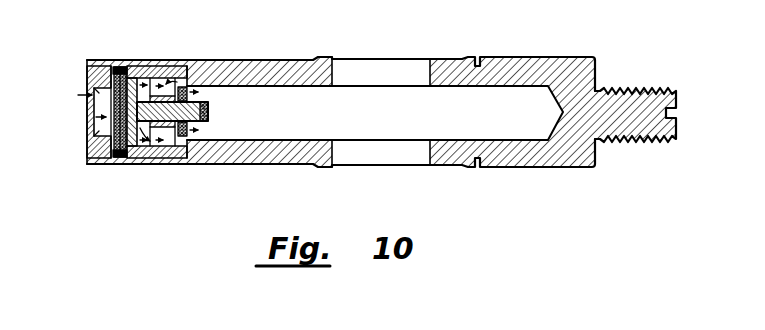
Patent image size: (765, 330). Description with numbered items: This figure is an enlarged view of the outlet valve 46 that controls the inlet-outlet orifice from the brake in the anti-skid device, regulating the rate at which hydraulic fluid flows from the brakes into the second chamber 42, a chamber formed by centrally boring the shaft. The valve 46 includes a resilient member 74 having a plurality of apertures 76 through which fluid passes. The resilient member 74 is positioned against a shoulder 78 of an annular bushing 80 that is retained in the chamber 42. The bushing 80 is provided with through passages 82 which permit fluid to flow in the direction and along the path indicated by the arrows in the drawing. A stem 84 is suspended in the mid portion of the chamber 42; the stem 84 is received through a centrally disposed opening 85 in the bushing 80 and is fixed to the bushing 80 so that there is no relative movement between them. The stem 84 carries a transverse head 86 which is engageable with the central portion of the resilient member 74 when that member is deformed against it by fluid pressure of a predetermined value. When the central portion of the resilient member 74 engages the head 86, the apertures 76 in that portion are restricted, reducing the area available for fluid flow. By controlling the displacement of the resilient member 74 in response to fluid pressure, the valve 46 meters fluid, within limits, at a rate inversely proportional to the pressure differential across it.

The second chamber 42 is at (277, 72).
The outlet valve 46 is at (86, 70).
The resilient member 74 is at (110, 105).
The apertures 76 is at (115, 68).
The shoulder 78 is at (130, 76).
The annular bushing 80 is at (167, 67).
The through passages 82 is at (182, 83).
The stem 84 is at (208, 121).
The centrally disposed opening 85 is at (260, 99).
The transverse head 86 is at (143, 163).